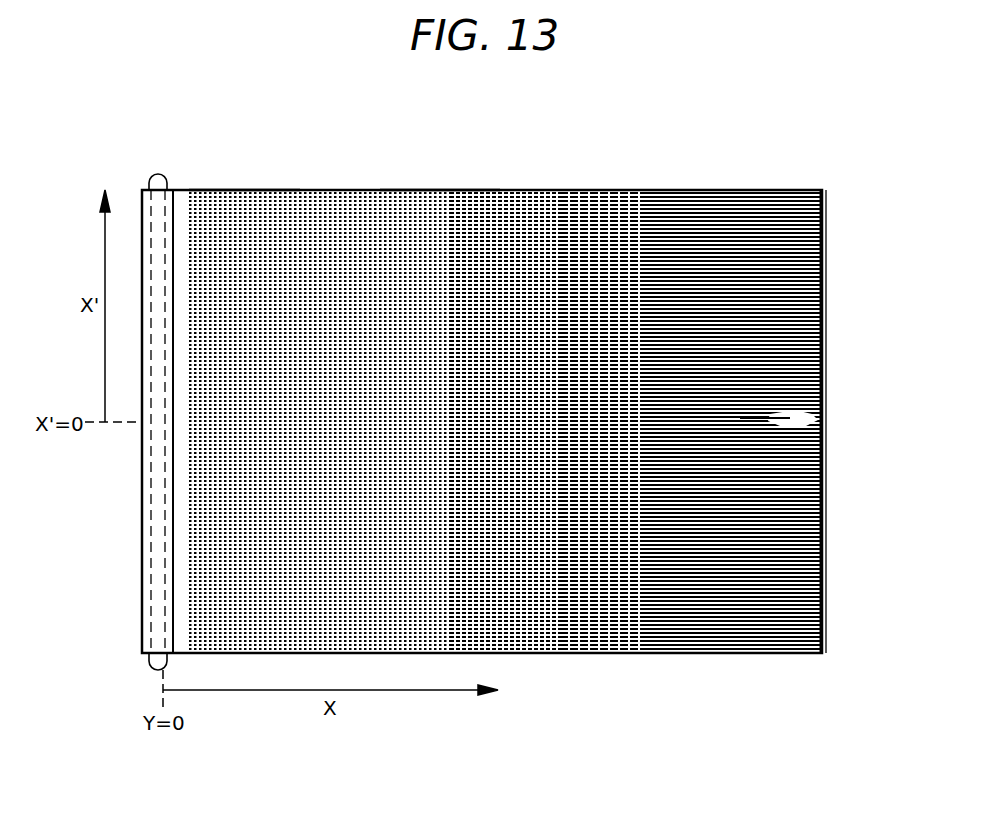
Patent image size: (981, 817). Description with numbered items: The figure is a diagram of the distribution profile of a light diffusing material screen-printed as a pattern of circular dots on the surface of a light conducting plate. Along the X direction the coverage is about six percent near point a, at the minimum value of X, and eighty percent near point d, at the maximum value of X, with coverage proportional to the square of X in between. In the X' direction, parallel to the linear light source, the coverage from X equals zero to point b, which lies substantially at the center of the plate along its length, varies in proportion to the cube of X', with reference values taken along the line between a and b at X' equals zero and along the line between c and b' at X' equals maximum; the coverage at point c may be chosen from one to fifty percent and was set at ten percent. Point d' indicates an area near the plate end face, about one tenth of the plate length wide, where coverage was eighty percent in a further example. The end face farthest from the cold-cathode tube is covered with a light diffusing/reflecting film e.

The point a is at (186, 424).
The point b is at (504, 389).
The point b' is at (440, 162).
The point c is at (194, 189).
The point d is at (809, 422).
The point d' is at (798, 395).
The light diffusing/reflecting film e is at (826, 456).